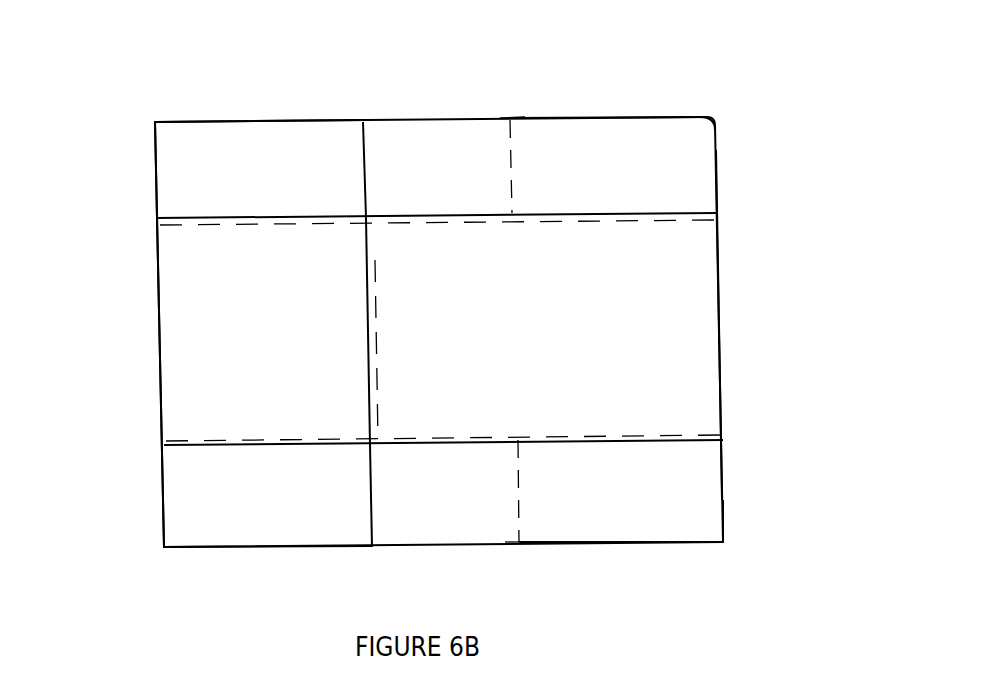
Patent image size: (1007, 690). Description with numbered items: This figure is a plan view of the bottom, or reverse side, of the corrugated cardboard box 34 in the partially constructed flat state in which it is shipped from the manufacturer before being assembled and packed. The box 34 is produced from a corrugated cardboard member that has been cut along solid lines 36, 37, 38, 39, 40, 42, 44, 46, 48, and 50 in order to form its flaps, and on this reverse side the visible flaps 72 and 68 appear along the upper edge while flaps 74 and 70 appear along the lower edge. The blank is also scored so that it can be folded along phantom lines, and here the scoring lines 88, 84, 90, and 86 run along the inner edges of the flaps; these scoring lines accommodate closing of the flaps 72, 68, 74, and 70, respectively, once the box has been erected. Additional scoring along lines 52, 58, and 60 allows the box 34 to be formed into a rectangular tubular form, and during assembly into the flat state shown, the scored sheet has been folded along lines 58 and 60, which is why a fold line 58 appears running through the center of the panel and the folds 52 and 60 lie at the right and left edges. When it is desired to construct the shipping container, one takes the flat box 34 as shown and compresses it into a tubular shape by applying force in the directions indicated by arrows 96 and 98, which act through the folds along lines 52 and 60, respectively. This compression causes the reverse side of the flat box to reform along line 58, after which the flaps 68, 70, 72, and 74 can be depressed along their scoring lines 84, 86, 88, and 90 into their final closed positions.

The box 34 is at (722, 80).
The solid line 36 is at (512, 140).
The solid line 37 is at (522, 517).
The solid line 38 is at (716, 145).
The solid line 39 is at (723, 498).
The solid line 40 is at (362, 157).
The solid line 42 is at (372, 528).
The solid line 44 is at (154, 148).
The solid line 46 is at (163, 505).
The solid line 48 is at (508, 160).
The solid line 50 is at (518, 508).
The scoring line 52 is at (720, 298).
The scoring line 58 is at (366, 314).
The scoring line 60 is at (158, 318).
The flap 68 is at (672, 189).
The flap 70 is at (684, 512).
The flap 72 is at (250, 202).
The flap 74 is at (268, 516).
The scoring line 84 is at (538, 218).
The scoring line 86 is at (550, 440).
The scoring line 88 is at (245, 222).
The scoring line 90 is at (247, 445).
The arrow 96 is at (733, 389).
The arrow 98 is at (132, 388).